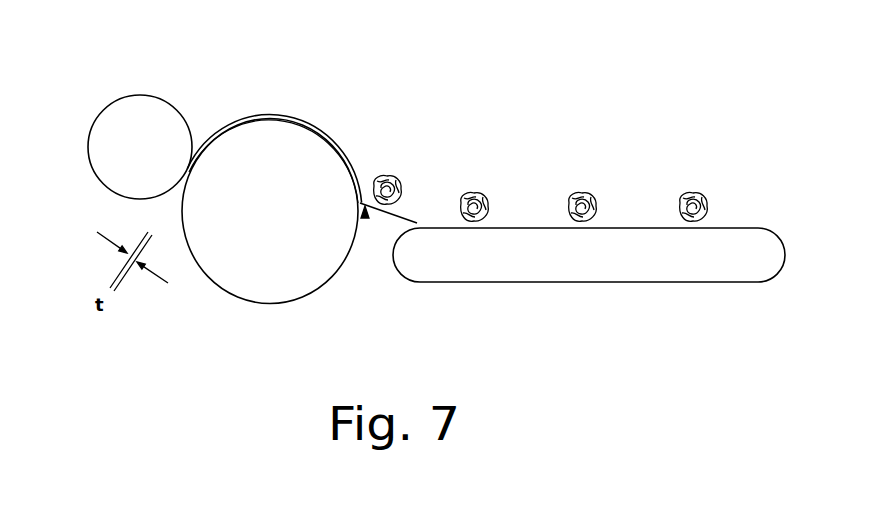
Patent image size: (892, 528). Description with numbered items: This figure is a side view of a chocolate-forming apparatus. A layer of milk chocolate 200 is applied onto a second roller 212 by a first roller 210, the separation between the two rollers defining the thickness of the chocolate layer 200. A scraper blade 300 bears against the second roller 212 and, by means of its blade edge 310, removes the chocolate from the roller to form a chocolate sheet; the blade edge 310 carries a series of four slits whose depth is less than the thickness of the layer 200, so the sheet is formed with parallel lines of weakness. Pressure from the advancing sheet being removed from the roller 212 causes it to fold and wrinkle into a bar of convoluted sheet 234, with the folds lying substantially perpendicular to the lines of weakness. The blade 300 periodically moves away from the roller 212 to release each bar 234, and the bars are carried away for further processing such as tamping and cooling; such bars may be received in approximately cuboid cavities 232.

The layer of milk chocolate 200 is at (280, 113).
The first roller 210 is at (152, 168).
The second roller 212 is at (300, 232).
The cuboid cavities 232 is at (587, 266).
The bar of convoluted sheet 234 is at (398, 173).
The scraper blade 300 is at (402, 213).
The blade edge 310 is at (365, 216).